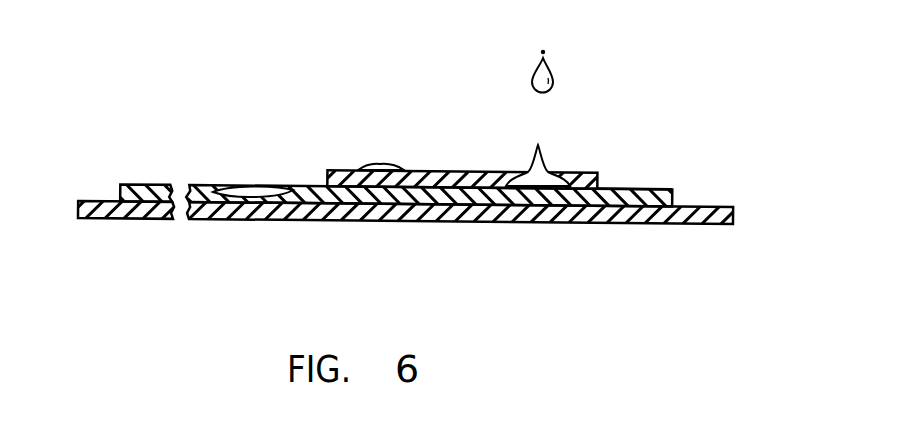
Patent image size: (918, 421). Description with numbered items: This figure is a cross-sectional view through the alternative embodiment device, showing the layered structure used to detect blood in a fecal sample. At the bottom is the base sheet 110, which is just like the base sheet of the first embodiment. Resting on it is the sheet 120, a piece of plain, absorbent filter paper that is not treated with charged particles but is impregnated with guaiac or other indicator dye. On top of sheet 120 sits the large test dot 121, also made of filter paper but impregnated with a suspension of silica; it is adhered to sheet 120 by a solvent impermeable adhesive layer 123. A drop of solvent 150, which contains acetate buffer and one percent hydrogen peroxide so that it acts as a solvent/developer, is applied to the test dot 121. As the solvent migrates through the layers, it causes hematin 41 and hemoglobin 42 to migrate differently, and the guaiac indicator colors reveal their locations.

The base sheet 110 is at (693, 224).
The sheet 120 is at (669, 189).
The test dot 121 is at (465, 170).
The adhesive layer 123 is at (610, 187).
The hematin 41 is at (377, 166).
The hemoglobin 42 is at (265, 184).
The solvent 150 is at (555, 73).